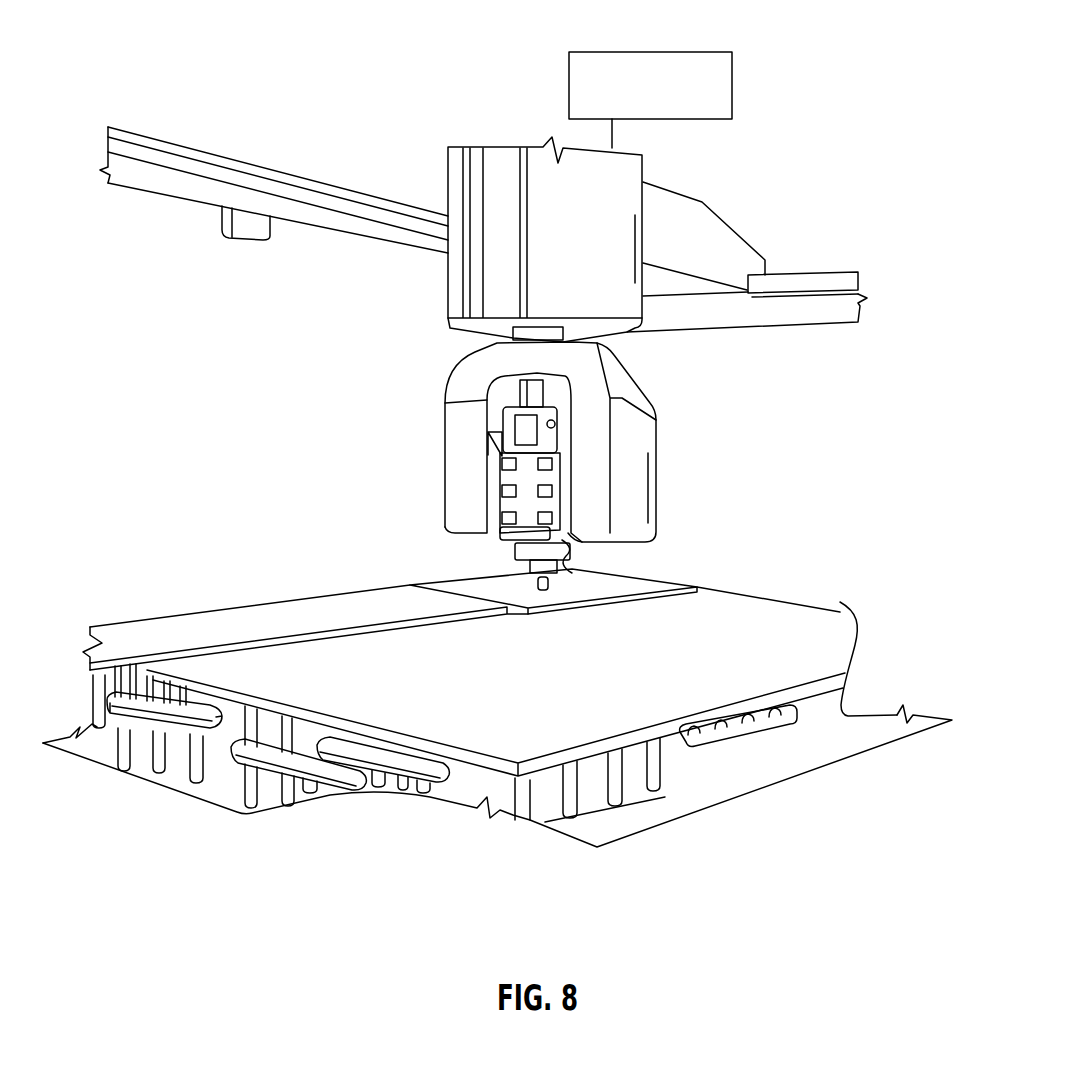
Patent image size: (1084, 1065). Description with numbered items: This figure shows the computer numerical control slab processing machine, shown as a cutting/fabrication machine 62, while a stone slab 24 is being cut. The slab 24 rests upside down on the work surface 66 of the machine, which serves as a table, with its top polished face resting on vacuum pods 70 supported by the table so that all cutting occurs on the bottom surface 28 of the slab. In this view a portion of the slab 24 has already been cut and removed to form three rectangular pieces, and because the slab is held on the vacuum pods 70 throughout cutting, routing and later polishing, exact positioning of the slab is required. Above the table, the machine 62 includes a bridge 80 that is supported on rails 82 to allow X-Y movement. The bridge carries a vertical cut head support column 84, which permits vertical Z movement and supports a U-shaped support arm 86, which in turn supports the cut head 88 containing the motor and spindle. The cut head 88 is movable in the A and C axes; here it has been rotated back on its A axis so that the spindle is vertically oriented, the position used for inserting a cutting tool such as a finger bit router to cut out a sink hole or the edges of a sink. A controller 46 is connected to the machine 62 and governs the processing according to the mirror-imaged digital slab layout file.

The slab 24 is at (743, 615).
The bottom surface 28 is at (590, 676).
The controller 46 is at (645, 52).
The cutting/fabrication machine 62 is at (370, 408).
The work surface 66 is at (793, 765).
The vacuum pods 70 is at (173, 720).
The bridge 80 is at (657, 205).
The rails 82 is at (797, 287).
The vertical cut head support column 84 is at (450, 287).
The U-shaped support arm 86 is at (630, 385).
The cut head 88 is at (446, 532).